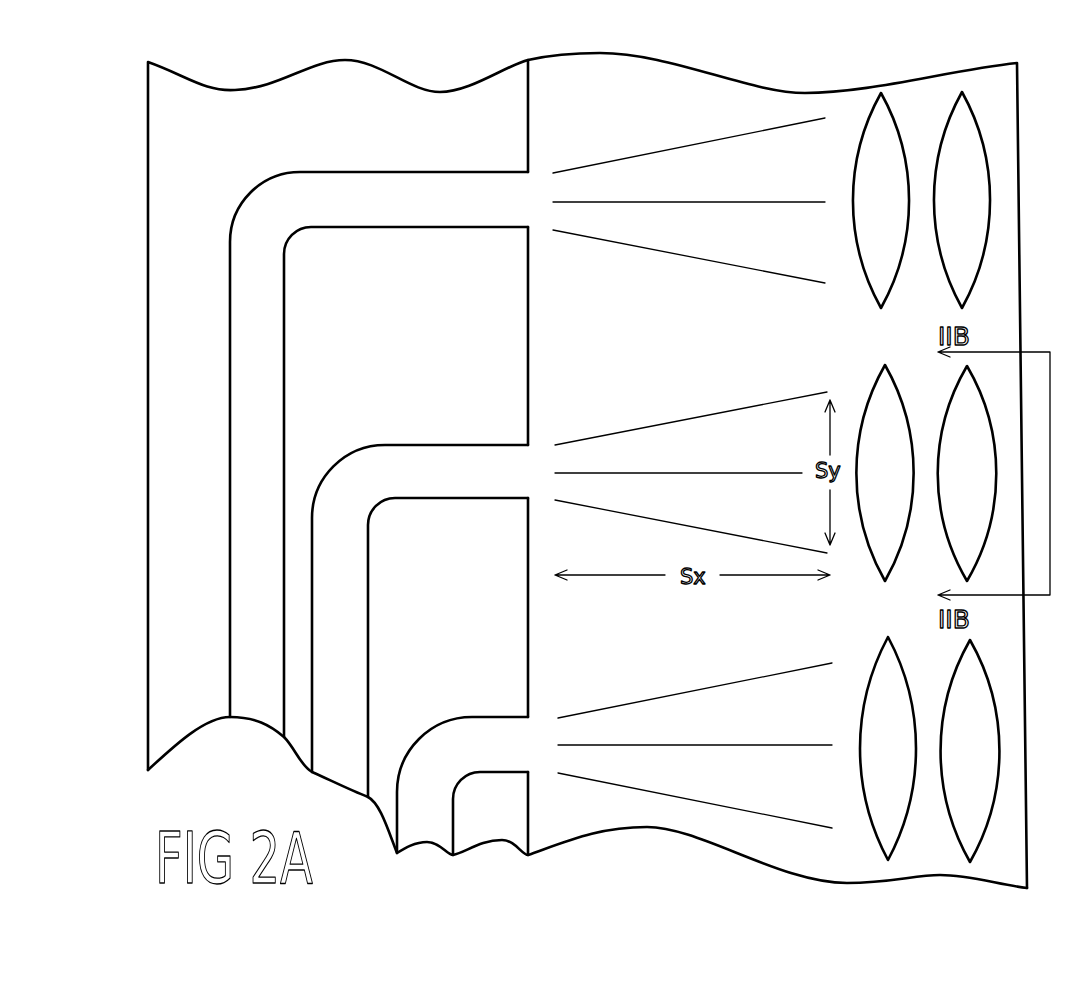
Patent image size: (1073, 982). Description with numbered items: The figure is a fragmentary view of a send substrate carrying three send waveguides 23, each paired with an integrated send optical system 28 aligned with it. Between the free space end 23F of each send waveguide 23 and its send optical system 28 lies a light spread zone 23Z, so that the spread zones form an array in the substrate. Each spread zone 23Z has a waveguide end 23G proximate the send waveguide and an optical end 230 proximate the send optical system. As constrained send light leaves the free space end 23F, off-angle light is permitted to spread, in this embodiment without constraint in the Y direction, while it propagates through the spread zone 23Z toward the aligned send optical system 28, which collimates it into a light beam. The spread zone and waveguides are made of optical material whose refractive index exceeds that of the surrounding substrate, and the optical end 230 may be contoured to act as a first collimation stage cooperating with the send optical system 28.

The send waveguide 23 is at (340, 200).
The free space end 23F is at (522, 206).
The light spread zone 23Z is at (702, 165).
The optical end 230 is at (823, 270).
The waveguide end 23G is at (553, 233).
The send optical system 28 is at (935, 153).